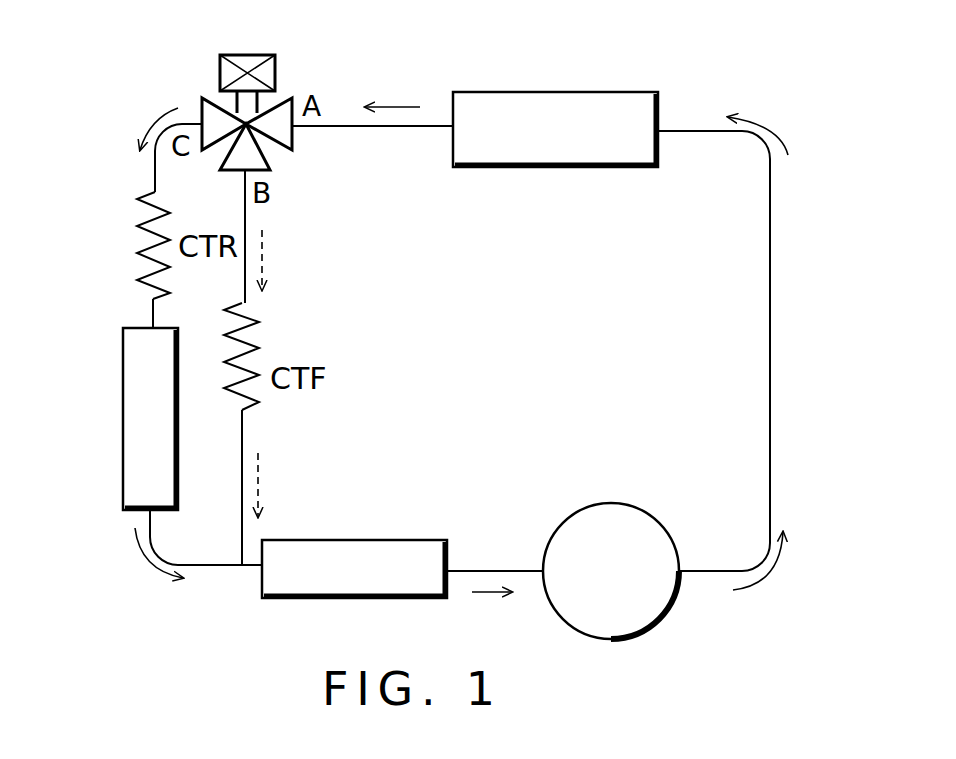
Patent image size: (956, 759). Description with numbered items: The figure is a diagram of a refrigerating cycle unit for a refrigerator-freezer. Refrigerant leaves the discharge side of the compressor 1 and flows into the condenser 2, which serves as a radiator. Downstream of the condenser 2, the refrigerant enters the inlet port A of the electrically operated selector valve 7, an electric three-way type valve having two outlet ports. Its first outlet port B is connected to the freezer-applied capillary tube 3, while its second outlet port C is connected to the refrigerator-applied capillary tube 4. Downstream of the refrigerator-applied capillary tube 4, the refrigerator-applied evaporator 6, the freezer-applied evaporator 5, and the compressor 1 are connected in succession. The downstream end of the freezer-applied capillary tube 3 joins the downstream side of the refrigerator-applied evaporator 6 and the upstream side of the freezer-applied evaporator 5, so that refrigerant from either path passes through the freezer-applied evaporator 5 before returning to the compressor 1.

The compressor 1 is at (645, 512).
The condenser 2 is at (553, 92).
The freezer-applied capillary tube 3 is at (263, 357).
The refrigerator-applied capillary tube 4 is at (137, 235).
The freezer-applied evaporator 5 is at (353, 540).
The refrigerator-applied evaporator 6 is at (123, 372).
The electrically operated selector valve 7 is at (276, 62).